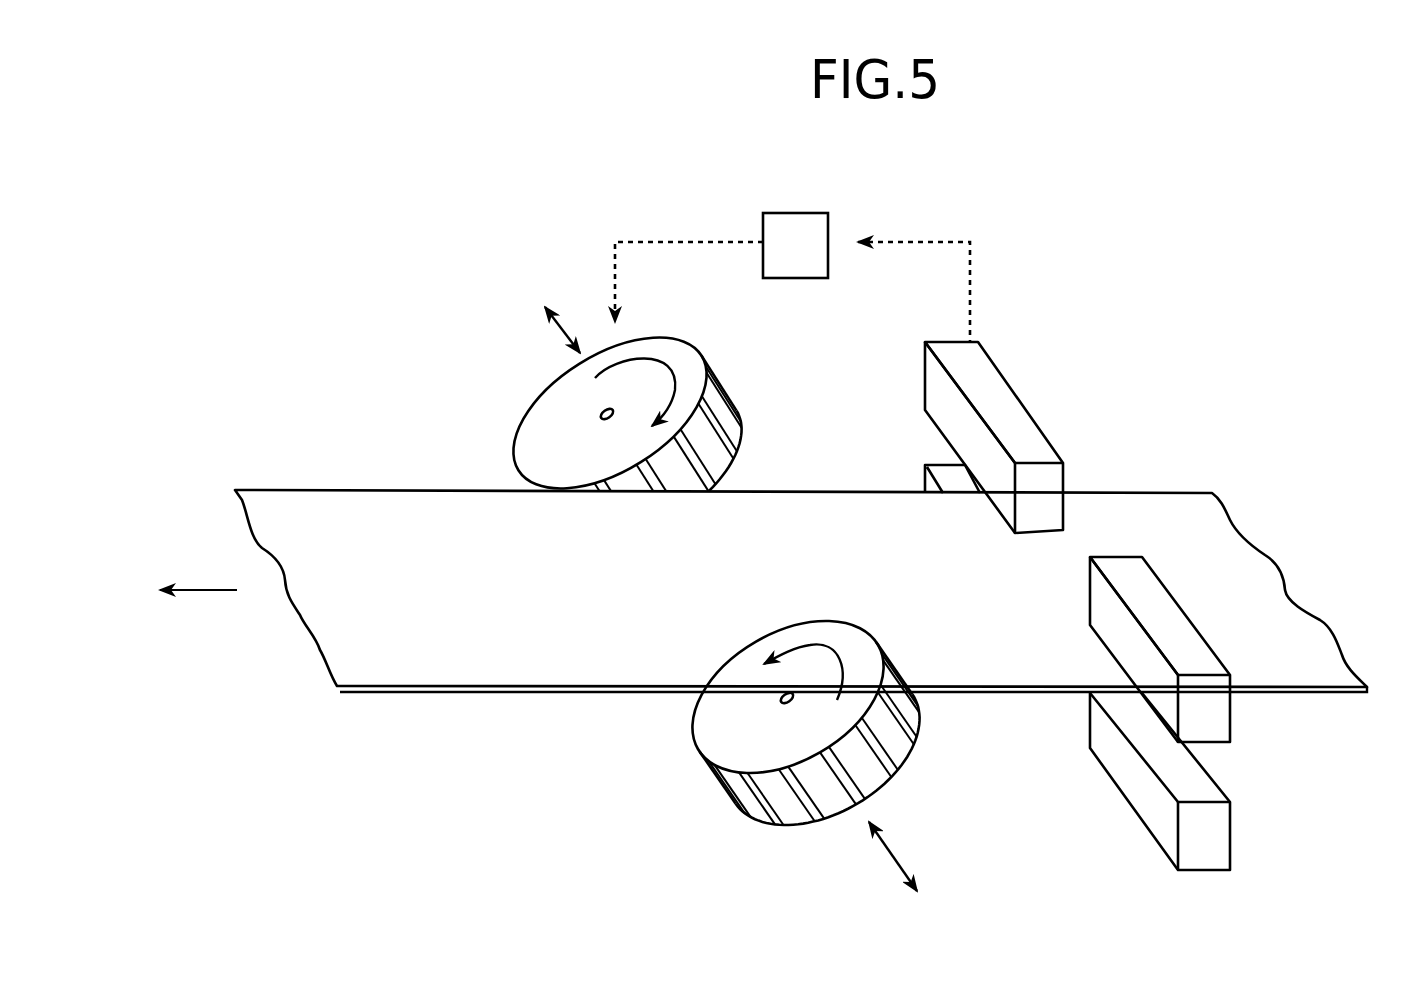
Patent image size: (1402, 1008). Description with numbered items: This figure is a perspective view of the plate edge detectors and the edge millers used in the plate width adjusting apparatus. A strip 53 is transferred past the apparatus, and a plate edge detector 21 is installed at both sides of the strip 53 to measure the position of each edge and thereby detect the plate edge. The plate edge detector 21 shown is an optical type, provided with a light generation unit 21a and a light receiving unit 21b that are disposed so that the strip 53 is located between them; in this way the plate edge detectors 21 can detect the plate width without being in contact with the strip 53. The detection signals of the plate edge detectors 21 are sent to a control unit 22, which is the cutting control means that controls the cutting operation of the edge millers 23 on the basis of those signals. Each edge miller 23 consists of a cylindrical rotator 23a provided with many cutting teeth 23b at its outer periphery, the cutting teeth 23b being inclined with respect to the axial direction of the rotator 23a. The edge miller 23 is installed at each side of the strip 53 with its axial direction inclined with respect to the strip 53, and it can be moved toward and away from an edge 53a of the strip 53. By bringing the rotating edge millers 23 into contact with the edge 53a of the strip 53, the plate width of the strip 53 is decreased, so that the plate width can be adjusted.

The strip 53 is at (367, 520).
The edge 53a is at (492, 692).
The plate edge detector 21 is at (1022, 398).
The light generation unit 21a is at (1233, 705).
The light receiving unit 21b is at (1210, 848).
The control unit 22 is at (798, 212).
The edge miller 23 is at (525, 409).
The cylindrical rotator 23a is at (700, 715).
The cutting teeth 23b is at (813, 825).